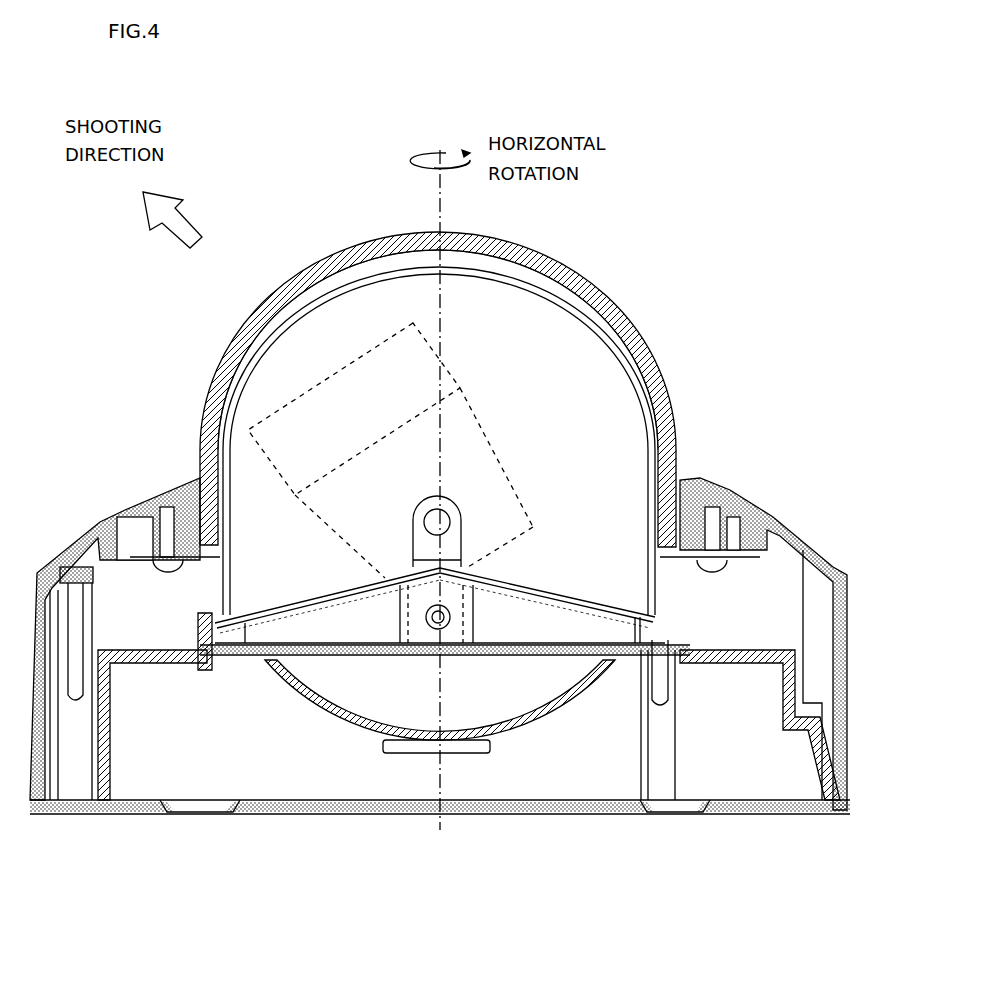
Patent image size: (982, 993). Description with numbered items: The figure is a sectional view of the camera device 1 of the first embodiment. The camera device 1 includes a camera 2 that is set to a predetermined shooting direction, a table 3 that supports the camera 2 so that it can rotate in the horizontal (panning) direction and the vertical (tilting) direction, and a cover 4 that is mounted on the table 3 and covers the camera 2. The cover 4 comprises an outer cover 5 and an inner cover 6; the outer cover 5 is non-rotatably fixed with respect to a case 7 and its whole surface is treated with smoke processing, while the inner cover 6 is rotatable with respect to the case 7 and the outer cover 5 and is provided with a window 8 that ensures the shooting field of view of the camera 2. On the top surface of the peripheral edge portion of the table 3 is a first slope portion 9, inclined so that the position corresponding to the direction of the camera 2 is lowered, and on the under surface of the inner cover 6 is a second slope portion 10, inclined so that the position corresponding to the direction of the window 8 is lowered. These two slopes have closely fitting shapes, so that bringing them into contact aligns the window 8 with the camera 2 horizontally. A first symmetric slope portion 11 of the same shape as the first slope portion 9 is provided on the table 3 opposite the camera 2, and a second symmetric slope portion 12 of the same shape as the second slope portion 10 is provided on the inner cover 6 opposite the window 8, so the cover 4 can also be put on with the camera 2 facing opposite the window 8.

The camera device 1 is at (702, 198).
The camera 2 is at (455, 380).
The table 3 is at (548, 655).
The cover 4 is at (481, 389).
The outer cover 5 is at (640, 325).
The inner cover 6 is at (721, 321).
The case 7 is at (127, 497).
The window 8 is at (281, 343).
The first slope portion 9 is at (325, 590).
The second slope portion 10 is at (313, 608).
The first symmetric slope portion 11 is at (573, 598).
The second symmetric slope portion 12 is at (537, 603).